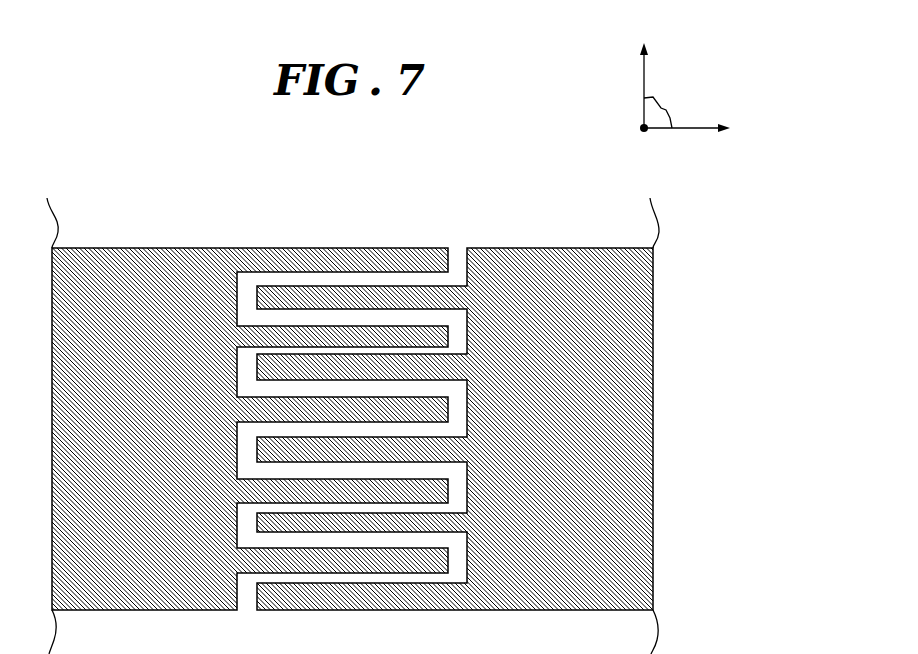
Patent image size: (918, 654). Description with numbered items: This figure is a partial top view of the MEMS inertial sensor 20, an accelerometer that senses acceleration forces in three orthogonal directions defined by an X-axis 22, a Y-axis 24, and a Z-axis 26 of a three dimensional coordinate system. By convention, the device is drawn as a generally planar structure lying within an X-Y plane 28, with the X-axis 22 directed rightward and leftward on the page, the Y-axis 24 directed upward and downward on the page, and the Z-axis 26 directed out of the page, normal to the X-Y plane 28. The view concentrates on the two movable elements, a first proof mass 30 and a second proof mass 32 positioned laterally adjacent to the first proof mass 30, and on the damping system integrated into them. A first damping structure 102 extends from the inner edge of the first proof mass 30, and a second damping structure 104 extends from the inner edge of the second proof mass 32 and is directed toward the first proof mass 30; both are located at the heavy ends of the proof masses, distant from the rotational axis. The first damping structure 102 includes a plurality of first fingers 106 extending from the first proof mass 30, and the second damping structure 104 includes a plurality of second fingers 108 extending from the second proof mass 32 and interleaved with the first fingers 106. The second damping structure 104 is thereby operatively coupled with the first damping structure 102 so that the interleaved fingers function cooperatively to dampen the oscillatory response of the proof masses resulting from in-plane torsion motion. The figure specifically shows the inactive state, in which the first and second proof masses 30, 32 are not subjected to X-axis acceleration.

The MEMS inertial sensor 20 is at (353, 426).
The X-axis 22 is at (690, 127).
The Y-axis 24 is at (643, 62).
The Z-axis 26 is at (644, 133).
The X-Y plane 28 is at (665, 107).
The first proof mass 30 is at (52, 273).
The second proof mass 32 is at (643, 260).
The first damping structure 102 is at (250, 258).
The second damping structure 104 is at (465, 297).
The first fingers 106 is at (269, 565).
The second fingers 108 is at (338, 593).